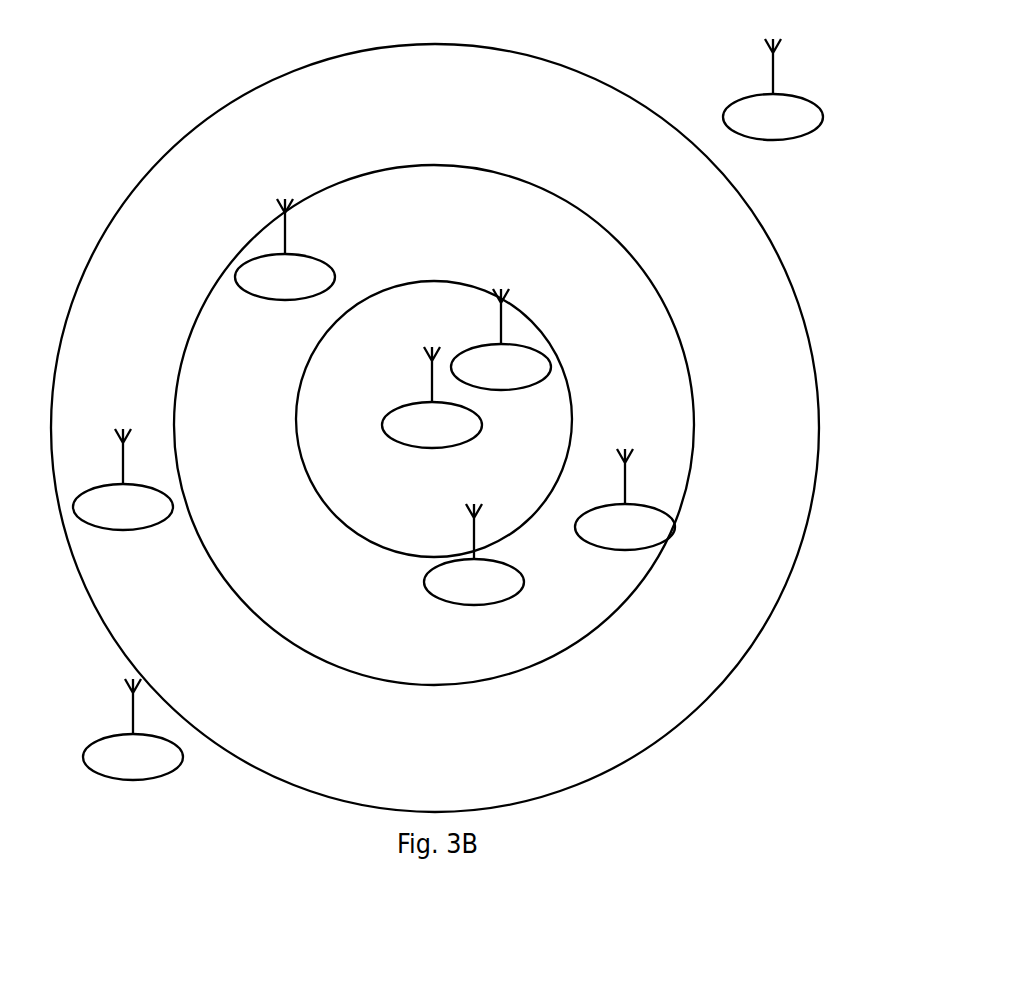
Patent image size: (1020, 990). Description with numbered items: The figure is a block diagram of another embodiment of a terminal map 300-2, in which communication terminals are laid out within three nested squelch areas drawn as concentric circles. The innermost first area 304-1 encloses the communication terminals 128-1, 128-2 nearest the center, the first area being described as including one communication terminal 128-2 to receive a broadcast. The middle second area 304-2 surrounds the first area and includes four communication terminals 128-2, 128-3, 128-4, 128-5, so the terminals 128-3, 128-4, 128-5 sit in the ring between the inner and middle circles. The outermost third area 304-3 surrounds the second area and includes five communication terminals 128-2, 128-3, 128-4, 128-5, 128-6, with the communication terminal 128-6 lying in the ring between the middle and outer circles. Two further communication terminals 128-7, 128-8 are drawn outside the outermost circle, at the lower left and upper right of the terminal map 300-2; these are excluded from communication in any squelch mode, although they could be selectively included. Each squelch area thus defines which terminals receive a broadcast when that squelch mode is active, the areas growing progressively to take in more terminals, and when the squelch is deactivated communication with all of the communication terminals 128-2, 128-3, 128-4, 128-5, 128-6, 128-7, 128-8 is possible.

The terminal map 300-2 is at (140, 149).
The first squelch area 304-1 is at (432, 290).
The second squelch area 304-2 is at (402, 172).
The third squelch area 304-3 is at (273, 77).
The communication terminal 128-1 is at (404, 436).
The communication terminal 128-2 is at (473, 378).
The communication terminal 128-3 is at (446, 593).
The communication terminal 128-4 is at (597, 538).
The communication terminal 128-5 is at (257, 288).
The communication terminal 128-6 is at (95, 518).
The communication terminal 128-7 is at (105, 768).
The communication terminal 128-8 is at (745, 128).